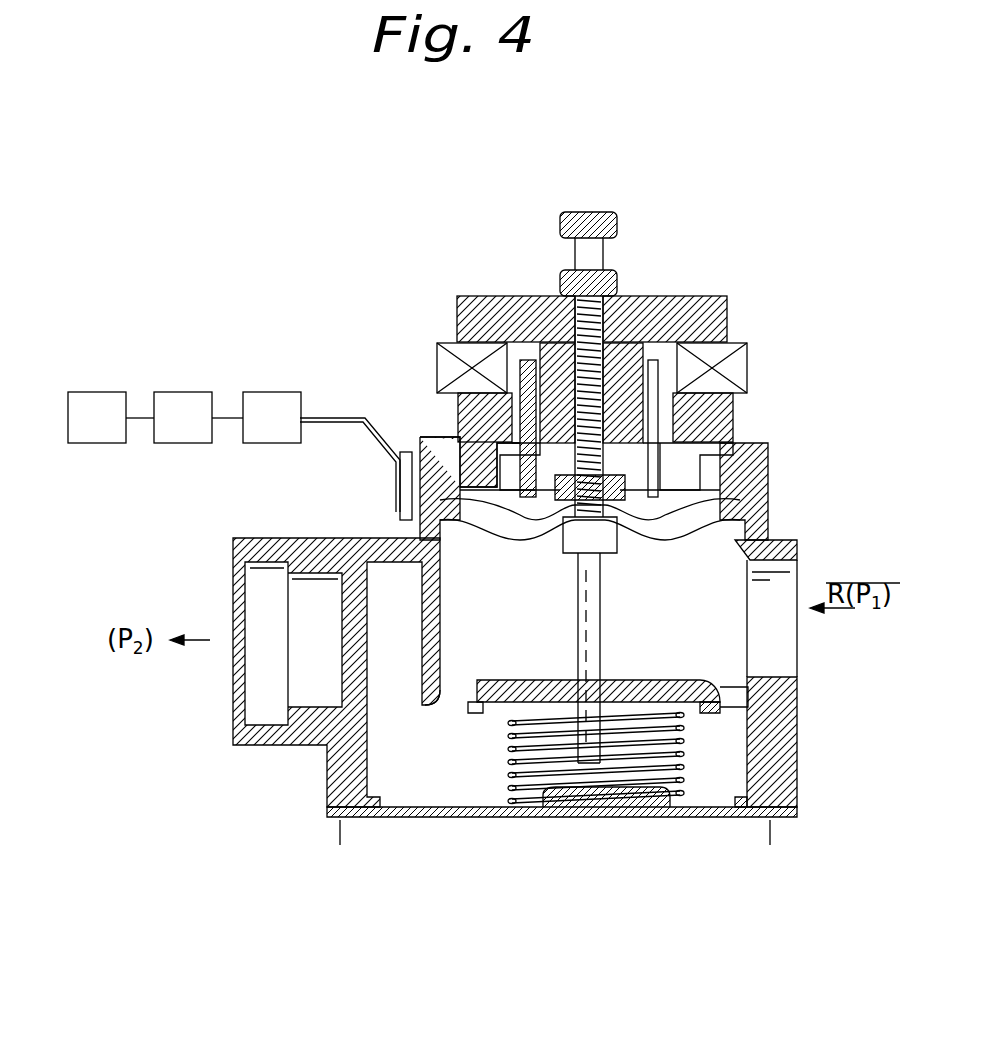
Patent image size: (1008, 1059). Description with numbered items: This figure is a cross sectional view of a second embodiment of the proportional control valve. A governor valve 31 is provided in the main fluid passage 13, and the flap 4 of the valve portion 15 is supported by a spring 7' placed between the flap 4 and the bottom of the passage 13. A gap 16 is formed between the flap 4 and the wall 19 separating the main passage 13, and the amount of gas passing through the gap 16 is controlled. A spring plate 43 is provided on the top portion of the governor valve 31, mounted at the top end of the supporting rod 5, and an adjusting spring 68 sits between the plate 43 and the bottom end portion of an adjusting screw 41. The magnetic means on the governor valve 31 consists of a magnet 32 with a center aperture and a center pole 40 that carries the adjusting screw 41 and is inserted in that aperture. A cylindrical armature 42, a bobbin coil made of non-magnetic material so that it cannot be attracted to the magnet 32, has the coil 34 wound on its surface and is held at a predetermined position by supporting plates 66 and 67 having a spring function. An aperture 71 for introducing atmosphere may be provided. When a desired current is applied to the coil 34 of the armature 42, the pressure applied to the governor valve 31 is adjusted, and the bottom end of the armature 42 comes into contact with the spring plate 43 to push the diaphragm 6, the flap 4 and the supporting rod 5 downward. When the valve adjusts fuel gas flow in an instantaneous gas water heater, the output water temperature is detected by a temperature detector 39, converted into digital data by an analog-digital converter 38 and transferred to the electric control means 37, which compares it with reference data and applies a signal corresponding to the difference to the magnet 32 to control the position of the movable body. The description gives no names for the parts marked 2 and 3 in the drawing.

The valve housing 2 is at (783, 658).
The outlet port 3 is at (248, 690).
The flap 4 is at (480, 700).
The supporting rod 5 is at (600, 628).
The diaphragm 6 is at (773, 503).
The spring 7' is at (578, 817).
The main fluid passage 13 is at (760, 690).
The valve portion 15 is at (520, 657).
The gap 16 is at (470, 702).
The wall 19 is at (440, 708).
The governor valve 31 is at (717, 598).
The magnet 32 is at (745, 358).
The coil 34 is at (505, 372).
The electric control means 37 is at (256, 417).
The analog-digital converter 38 is at (169, 417).
The temperature detector 39 is at (97, 417).
The center pole 40 is at (700, 305).
The adjusting screw 41 is at (612, 222).
The cylindrical armature 42 is at (656, 372).
The spring plate 43 is at (770, 490).
The supporting plate 66 is at (745, 440).
The supporting plate 67 is at (745, 485).
The adjusting spring 68 is at (403, 513).
The aperture 71 is at (440, 437).